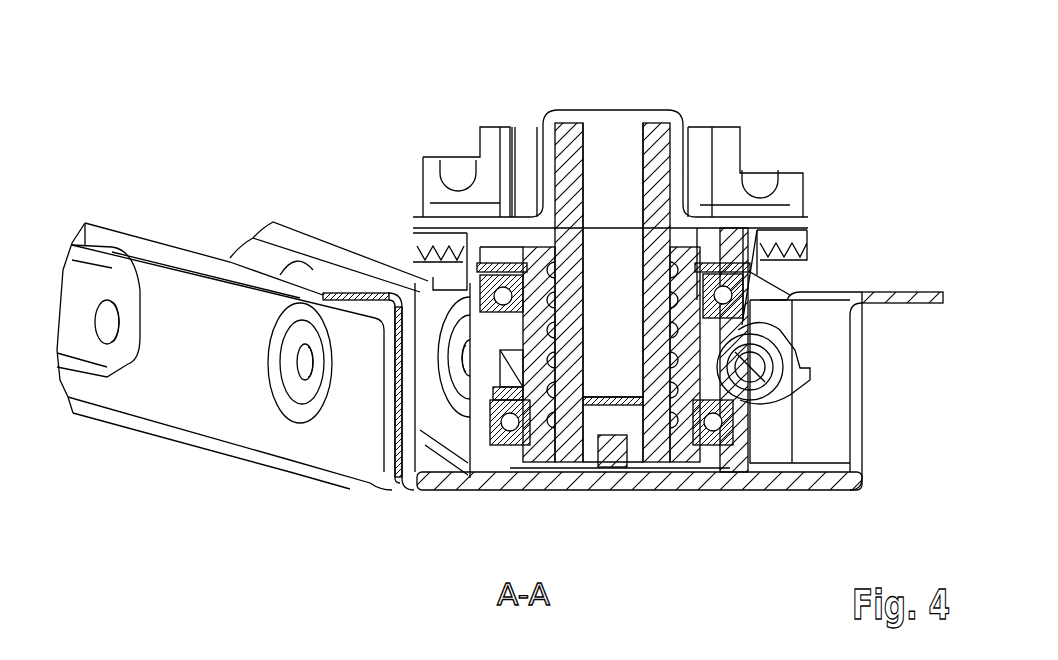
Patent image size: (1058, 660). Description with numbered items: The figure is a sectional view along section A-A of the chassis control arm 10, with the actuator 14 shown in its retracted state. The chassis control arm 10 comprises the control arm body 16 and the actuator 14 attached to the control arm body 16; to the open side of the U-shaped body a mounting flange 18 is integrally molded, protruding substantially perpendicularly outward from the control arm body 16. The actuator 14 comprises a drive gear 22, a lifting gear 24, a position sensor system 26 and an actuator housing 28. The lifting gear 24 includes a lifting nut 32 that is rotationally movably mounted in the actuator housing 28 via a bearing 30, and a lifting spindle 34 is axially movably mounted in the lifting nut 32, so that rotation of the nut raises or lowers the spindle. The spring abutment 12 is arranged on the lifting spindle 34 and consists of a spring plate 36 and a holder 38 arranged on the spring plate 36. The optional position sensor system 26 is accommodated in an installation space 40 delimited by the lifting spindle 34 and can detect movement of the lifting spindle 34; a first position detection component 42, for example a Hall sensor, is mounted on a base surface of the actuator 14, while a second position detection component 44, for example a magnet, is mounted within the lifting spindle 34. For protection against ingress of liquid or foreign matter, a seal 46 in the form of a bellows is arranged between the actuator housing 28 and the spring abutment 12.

The chassis control arm 10 is at (181, 86).
The spring abutment 12 is at (512, 97).
The actuator 14 is at (743, 97).
The control arm body 16 is at (198, 402).
The mounting flange 18 is at (908, 304).
The drive gear 22 is at (763, 350).
The lifting gear 24 is at (663, 496).
The position sensor system 26 is at (590, 428).
The actuator housing 28 is at (470, 367).
The bearing 30 is at (422, 260).
The lifting nut 32 is at (681, 425).
The lifting spindle 34 is at (655, 150).
The spring plate 36 is at (472, 195).
The holder 38 is at (733, 170).
The installation space 40 is at (612, 150).
The first position detection component 42 is at (604, 468).
The second position detection component 44 is at (631, 406).
The seal 46 is at (805, 243).